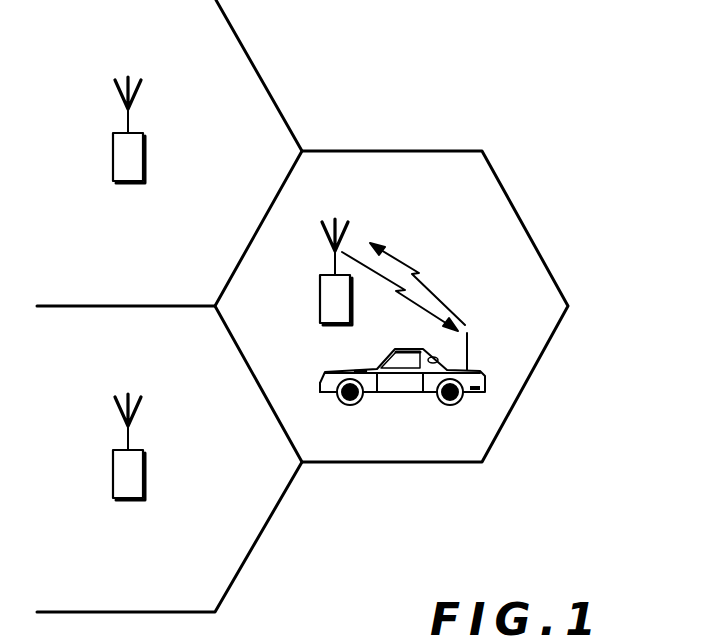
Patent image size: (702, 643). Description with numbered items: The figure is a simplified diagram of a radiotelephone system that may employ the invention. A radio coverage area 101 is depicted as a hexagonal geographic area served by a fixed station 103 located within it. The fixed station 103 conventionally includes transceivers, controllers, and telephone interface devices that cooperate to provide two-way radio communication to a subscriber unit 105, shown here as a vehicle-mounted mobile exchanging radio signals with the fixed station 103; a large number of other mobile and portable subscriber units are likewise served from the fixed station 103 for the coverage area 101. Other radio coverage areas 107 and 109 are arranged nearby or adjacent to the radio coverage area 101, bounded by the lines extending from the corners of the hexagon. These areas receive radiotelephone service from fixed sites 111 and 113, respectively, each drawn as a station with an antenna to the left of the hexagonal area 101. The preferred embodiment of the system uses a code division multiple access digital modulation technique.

The radio coverage area 101 is at (502, 188).
The fixed station 103 is at (320, 300).
The subscriber unit 105 is at (486, 374).
The radio coverage area 107 is at (243, 40).
The radio coverage area 109 is at (260, 535).
The fixed site 111 is at (113, 160).
The fixed site 113 is at (112, 465).